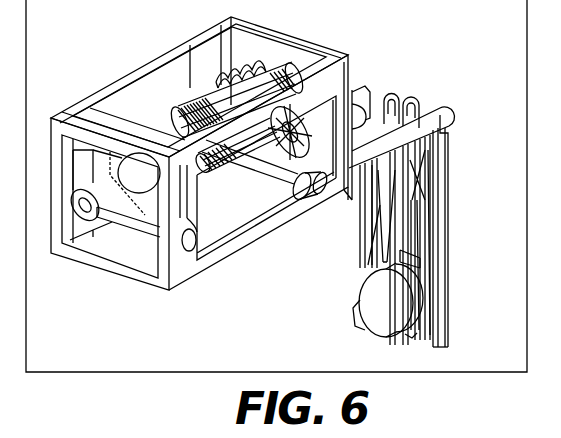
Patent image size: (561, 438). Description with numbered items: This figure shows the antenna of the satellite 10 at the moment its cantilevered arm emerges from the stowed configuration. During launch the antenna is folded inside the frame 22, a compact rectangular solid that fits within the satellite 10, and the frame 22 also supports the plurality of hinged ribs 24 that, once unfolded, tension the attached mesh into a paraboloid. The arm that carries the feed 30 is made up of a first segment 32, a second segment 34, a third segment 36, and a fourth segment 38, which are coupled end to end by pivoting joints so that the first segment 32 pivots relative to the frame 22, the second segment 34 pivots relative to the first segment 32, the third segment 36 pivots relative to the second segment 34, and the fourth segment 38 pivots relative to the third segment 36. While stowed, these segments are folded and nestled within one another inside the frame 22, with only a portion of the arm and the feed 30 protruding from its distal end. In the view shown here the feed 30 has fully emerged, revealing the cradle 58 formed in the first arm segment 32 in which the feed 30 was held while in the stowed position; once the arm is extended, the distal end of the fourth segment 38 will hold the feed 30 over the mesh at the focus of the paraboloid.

The satellite 10 is at (513, 30).
The frame 22 is at (137, 65).
The hinged ribs 24 is at (197, 100).
The cradle 58 is at (350, 115).
The first segment 32 is at (408, 120).
The second segment 34 is at (447, 182).
The third segment 36 is at (380, 245).
The fourth segment 38 is at (402, 230).
The feed 30 is at (370, 298).